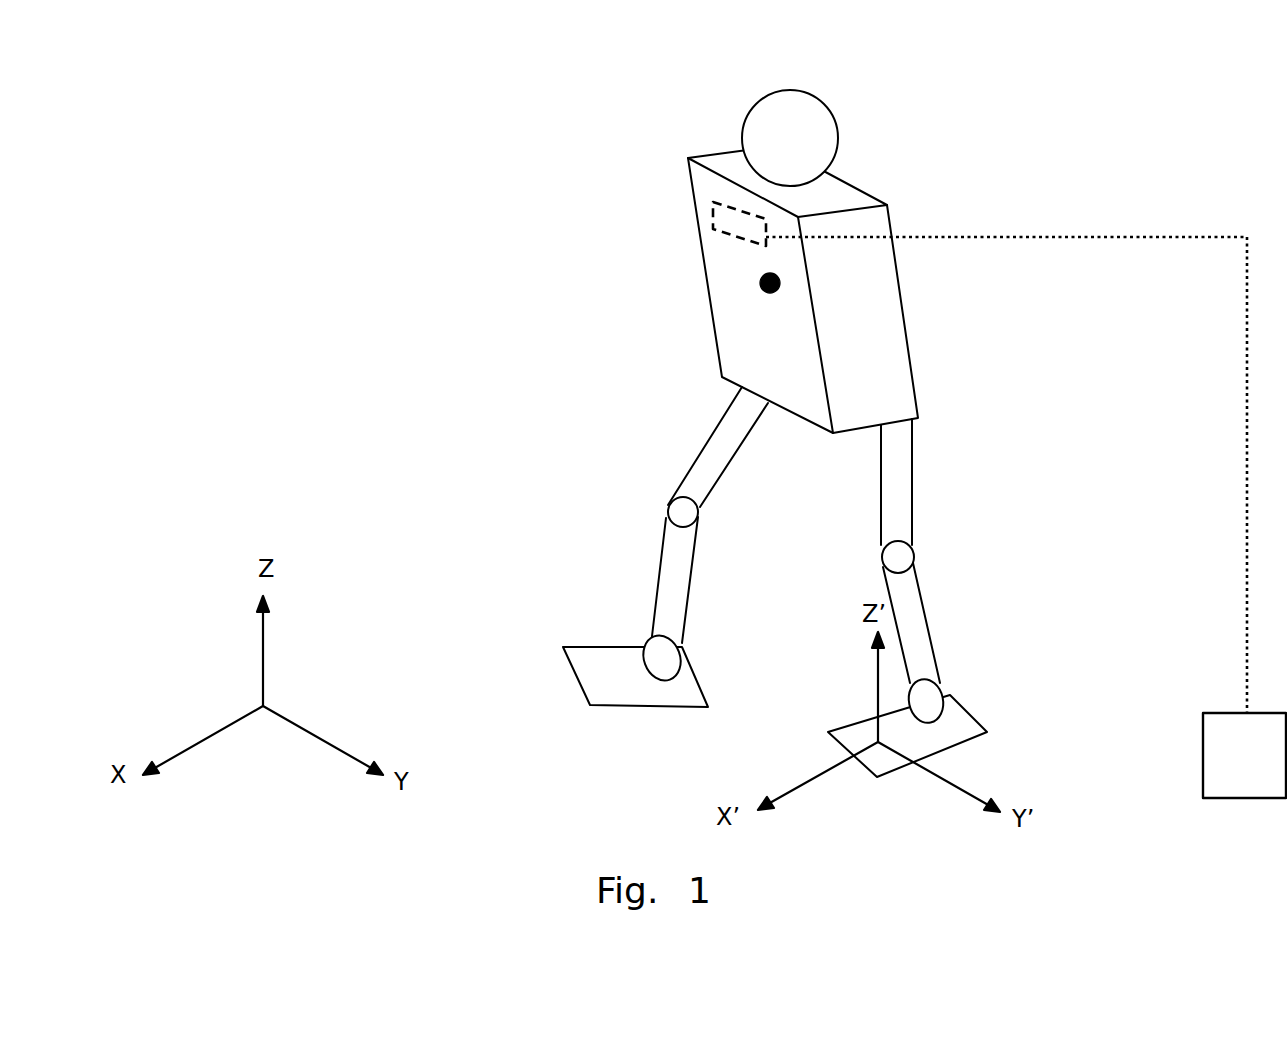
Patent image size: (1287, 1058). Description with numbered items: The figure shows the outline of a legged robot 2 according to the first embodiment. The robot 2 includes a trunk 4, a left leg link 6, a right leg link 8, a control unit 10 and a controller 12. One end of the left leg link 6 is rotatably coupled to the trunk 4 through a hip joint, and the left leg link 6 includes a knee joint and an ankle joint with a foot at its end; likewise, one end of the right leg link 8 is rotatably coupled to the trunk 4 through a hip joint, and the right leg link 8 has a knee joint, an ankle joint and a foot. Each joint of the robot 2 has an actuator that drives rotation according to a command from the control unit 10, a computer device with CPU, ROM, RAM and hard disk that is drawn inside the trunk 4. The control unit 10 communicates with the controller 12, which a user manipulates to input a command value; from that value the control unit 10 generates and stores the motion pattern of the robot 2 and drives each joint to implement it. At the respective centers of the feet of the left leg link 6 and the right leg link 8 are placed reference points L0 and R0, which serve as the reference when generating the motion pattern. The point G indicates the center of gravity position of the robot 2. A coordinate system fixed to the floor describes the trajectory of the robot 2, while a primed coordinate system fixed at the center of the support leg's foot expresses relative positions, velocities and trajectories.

The robot 2 is at (952, 105).
The trunk 4 is at (905, 318).
The left leg link 6 is at (913, 480).
The right leg link 8 is at (730, 468).
The control unit 10 is at (713, 205).
The controller 12 is at (1203, 757).
The center of gravity position G is at (760, 285).
The reference point R0 is at (600, 672).
The reference point L0 is at (882, 742).